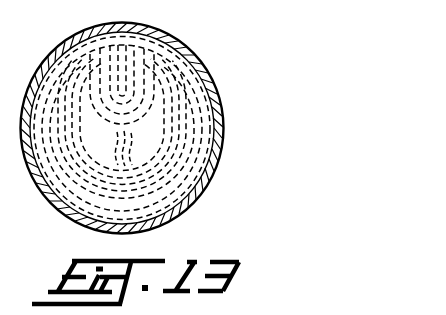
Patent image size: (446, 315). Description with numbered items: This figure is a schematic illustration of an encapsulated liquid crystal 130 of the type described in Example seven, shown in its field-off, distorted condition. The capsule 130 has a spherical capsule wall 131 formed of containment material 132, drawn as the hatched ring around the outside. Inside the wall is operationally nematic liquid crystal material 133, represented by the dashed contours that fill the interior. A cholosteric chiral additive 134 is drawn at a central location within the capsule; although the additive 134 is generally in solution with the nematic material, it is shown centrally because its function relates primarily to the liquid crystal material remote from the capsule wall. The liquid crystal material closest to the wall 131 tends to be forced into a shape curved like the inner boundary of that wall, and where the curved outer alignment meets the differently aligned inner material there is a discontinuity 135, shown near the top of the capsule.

The encapsulated liquid crystal 130 is at (204, 59).
The spherical capsule wall 131 is at (215, 89).
The containment material 132 is at (222, 120).
The operationally nematic liquid crystal material 133 is at (196, 146).
The cholosteric chiral additive 134 is at (132, 165).
The discontinuity 135 is at (122, 54).